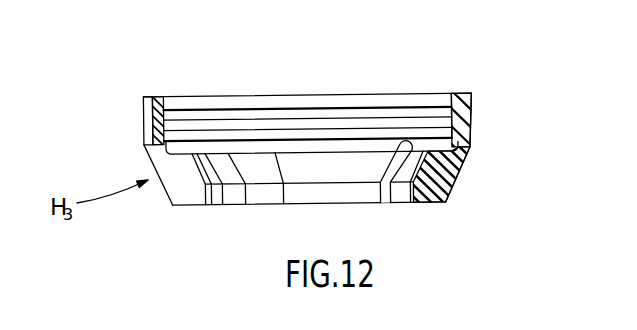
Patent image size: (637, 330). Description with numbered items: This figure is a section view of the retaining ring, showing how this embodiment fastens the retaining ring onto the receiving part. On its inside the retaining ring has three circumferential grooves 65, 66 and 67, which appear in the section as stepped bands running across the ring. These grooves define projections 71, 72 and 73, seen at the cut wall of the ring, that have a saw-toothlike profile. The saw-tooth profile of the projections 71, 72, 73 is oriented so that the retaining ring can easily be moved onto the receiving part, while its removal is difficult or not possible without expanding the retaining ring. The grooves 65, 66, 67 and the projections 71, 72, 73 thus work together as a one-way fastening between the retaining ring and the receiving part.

The circumferential groove 65 is at (167, 116).
The circumferential groove 66 is at (256, 128).
The circumferential groove 67 is at (312, 143).
The projection 71 is at (470, 138).
The projection 72 is at (477, 110).
The projection 73 is at (456, 103).